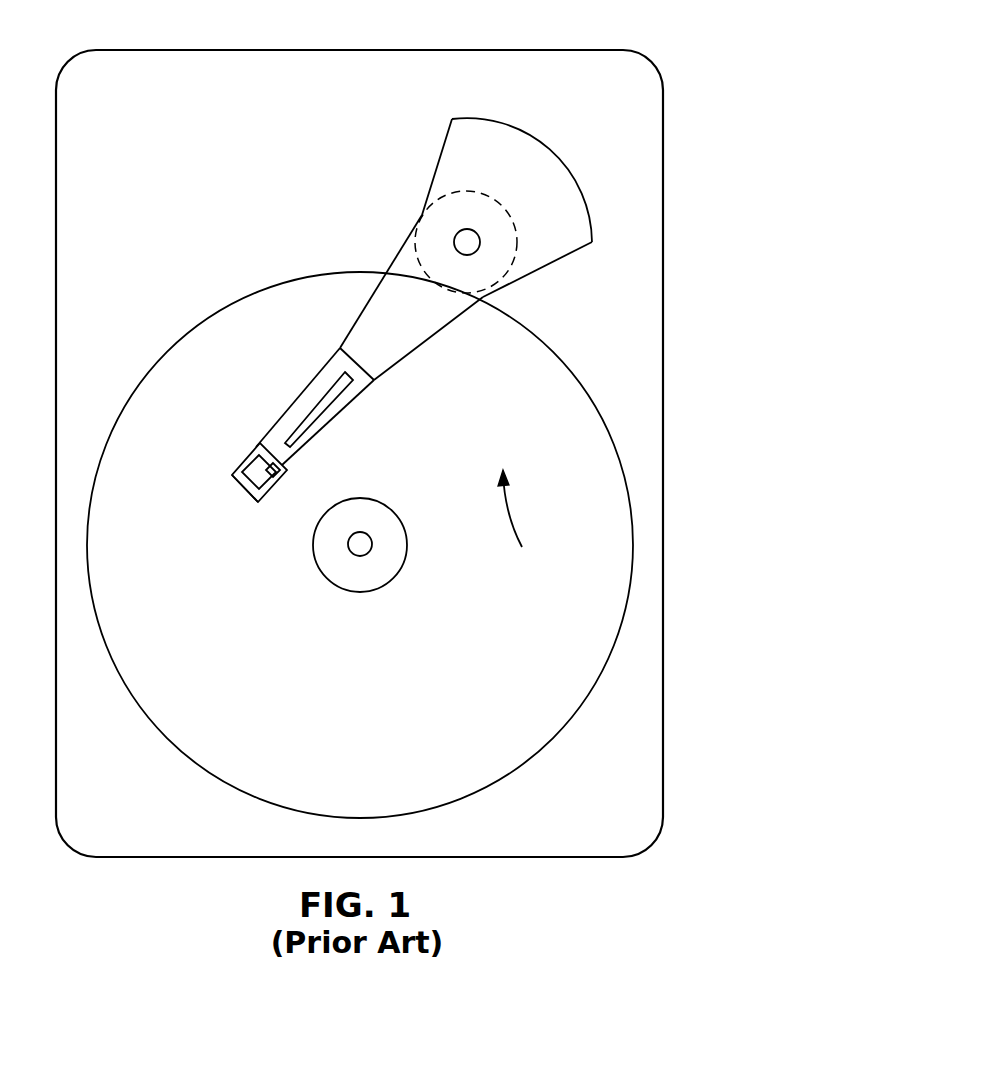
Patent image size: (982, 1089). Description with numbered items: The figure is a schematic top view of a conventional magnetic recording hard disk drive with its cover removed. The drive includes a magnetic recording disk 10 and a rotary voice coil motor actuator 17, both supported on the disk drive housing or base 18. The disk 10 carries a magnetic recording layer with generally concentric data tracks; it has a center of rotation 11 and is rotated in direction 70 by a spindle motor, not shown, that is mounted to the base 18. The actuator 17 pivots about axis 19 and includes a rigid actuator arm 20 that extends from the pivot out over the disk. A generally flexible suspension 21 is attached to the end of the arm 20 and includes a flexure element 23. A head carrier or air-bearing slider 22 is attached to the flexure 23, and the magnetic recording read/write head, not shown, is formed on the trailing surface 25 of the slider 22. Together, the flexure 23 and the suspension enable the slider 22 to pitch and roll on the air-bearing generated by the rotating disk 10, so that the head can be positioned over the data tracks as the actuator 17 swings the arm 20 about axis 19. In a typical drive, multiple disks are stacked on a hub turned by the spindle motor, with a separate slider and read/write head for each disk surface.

The magnetic recording disk 10 is at (540, 757).
The center of rotation 11 is at (368, 540).
The rotary voice coil motor actuator 17 is at (563, 153).
The disk drive housing or base 18 is at (594, 50).
The pivot axis 19 is at (462, 242).
The rigid actuator arm 20 is at (372, 318).
The suspension 21 is at (330, 377).
The air-bearing slider 22 is at (258, 456).
The flexure element 23 is at (275, 477).
The trailing surface 25 is at (242, 490).
The direction of rotation 70 is at (518, 512).